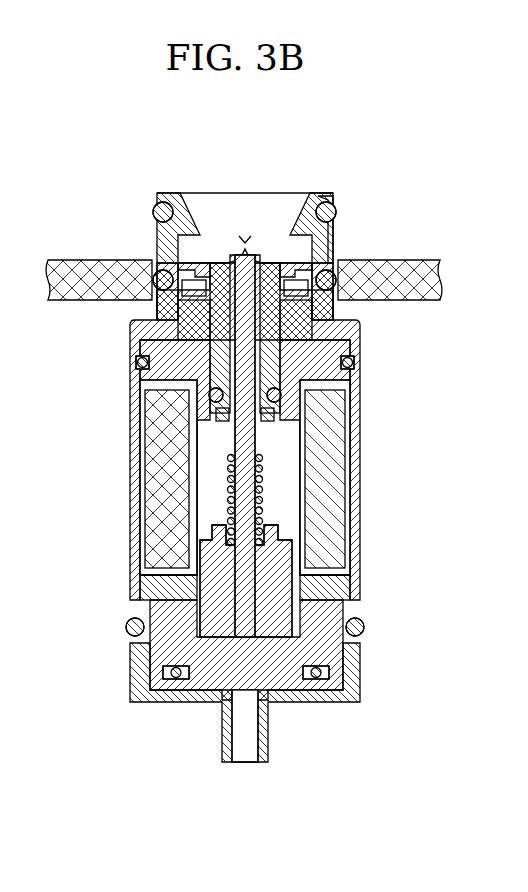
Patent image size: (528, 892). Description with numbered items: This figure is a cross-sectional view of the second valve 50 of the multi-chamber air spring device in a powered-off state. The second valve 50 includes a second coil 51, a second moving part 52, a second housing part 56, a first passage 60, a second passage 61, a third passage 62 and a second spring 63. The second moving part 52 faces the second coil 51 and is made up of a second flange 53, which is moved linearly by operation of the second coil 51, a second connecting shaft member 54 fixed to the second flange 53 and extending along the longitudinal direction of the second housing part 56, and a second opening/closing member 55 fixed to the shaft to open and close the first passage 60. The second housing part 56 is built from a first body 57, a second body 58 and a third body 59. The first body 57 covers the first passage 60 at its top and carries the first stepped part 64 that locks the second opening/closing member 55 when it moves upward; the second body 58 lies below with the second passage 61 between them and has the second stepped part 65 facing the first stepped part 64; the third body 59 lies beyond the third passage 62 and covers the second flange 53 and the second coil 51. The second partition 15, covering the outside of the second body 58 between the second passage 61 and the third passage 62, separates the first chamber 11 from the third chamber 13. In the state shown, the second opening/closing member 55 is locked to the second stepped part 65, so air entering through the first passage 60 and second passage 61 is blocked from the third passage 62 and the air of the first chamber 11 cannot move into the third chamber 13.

The first chamber 11 is at (79, 215).
The third chamber 13 is at (95, 395).
The second partition 15 is at (425, 281).
The second valve 50 is at (295, 427).
The second coil 51 is at (338, 455).
The second moving part 52 is at (274, 254).
The second flange 53 is at (274, 560).
The second connecting shaft member 54 is at (240, 447).
The second opening/closing member 55 is at (213, 258).
The second housing part 56 is at (368, 410).
The first body 57 is at (324, 192).
The second body 58 is at (334, 266).
The third body 59 is at (360, 512).
The first passage 60 is at (223, 250).
The second passage 61 is at (160, 233).
The third passage 62 is at (197, 331).
The second spring 63 is at (226, 497).
The first stepped part 64 is at (192, 262).
The second stepped part 65 is at (320, 317).